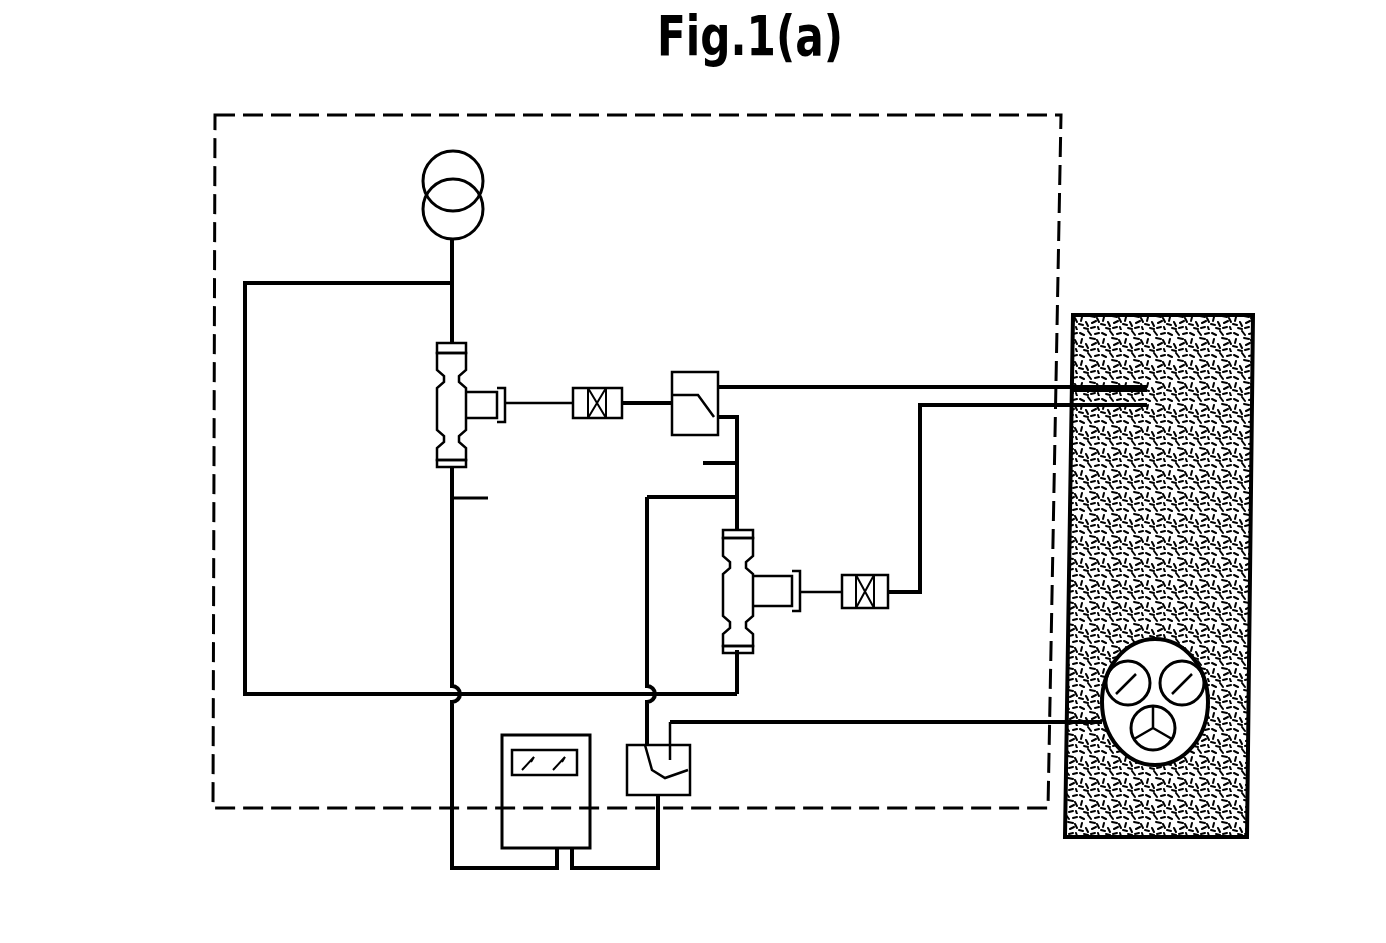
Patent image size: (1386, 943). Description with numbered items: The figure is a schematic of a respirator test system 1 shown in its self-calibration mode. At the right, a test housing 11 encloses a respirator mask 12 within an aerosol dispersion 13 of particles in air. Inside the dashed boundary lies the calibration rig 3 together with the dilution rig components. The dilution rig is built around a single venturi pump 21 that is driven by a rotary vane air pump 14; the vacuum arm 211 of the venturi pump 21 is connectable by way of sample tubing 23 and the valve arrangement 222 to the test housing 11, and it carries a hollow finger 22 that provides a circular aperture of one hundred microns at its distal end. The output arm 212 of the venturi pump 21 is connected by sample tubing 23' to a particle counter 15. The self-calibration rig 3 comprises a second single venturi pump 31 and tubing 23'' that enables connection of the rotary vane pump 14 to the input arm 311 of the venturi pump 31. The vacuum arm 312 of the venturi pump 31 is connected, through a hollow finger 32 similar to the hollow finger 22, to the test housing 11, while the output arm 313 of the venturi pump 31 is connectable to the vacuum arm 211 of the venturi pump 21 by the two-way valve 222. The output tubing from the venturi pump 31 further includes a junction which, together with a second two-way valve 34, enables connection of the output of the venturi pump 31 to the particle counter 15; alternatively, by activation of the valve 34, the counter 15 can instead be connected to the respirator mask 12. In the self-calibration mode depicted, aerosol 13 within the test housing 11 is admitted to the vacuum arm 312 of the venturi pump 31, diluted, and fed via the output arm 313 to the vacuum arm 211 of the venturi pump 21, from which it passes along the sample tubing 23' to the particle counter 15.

The respirator test system 1 is at (1206, 218).
The calibration rig 3 is at (208, 668).
The test housing 11 is at (1255, 402).
The respirator mask 12 is at (1208, 735).
The aerosol dispersion 13 is at (1250, 568).
The rotary vane air pump 14 is at (483, 177).
The particle counter 15 is at (532, 832).
The venturi pump 21 is at (453, 403).
The vacuum arm 211 is at (497, 388).
The output arm 212 is at (440, 447).
The hollow finger 22 is at (608, 395).
The two-way valve 222 is at (697, 378).
The sample tubing 23 is at (897, 526).
The sample tubing 23' is at (555, 553).
The tubing 23'' is at (438, 488).
The venturi pump 31 is at (737, 597).
The input arm 311 is at (752, 632).
The vacuum arm 312 is at (784, 575).
The output arm 313 is at (745, 548).
The hollow finger 32 is at (868, 608).
The second two-way valve 34 is at (688, 778).